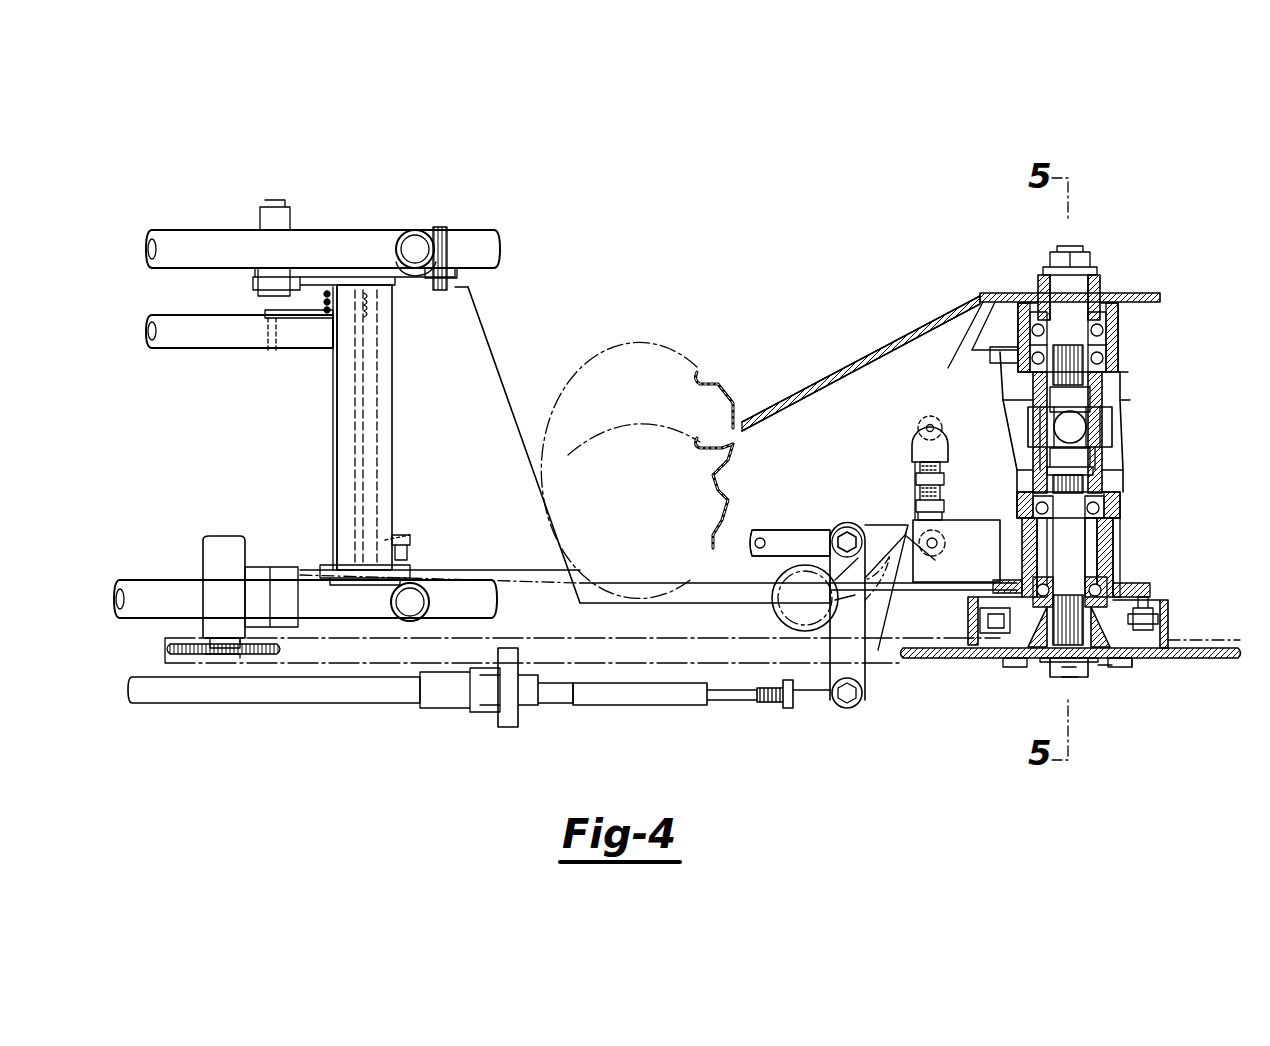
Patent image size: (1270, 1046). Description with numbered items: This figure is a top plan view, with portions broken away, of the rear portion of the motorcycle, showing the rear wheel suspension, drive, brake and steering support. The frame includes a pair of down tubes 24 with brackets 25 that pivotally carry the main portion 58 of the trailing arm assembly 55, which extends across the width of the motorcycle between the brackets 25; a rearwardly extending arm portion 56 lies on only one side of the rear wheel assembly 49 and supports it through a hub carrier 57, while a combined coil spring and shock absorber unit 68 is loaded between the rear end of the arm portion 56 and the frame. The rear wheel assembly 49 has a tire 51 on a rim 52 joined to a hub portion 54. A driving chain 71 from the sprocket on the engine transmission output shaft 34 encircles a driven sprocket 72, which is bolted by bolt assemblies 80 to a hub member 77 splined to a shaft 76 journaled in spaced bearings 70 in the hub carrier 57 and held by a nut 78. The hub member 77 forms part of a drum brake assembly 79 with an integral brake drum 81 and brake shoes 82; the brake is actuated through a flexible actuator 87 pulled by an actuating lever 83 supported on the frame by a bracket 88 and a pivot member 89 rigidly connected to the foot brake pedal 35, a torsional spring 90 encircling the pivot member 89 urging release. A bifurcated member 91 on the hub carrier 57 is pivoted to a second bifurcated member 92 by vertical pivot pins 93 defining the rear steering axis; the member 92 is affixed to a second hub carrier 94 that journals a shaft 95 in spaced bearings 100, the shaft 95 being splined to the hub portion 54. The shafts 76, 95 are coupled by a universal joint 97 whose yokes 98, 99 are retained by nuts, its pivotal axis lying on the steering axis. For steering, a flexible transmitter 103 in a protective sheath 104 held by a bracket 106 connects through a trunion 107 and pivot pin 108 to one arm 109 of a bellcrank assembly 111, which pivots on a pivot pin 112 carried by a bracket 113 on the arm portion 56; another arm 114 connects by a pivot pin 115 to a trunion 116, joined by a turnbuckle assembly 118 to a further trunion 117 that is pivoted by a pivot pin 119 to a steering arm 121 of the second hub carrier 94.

The down tube 24 is at (332, 238).
The bracket 25 is at (398, 268).
The engine transmission output shaft 34 is at (210, 552).
The foot brake pedal 35 is at (198, 335).
The rear wheel assembly 49 is at (731, 380).
The tire 51 is at (622, 342).
The rim 52 is at (760, 405).
The hub portion 54 is at (1104, 292).
The trailing arm assembly 55 is at (508, 335).
The rearwardly extending arm portion 56 is at (716, 590).
The hub carrier 57 is at (1127, 540).
The main portion 58 is at (337, 407).
The combined coil spring and shock absorber unit 68 is at (772, 530).
The bearings 70 is at (1120, 505).
The driving chain 71 is at (1232, 640).
The driven sprocket 72 is at (1185, 658).
The shaft 76 is at (1124, 525).
The hub member 77 is at (1052, 664).
The nut 78 is at (1078, 664).
The drum brake assembly 79 is at (1179, 617).
The bolt assemblies 80 is at (1112, 664).
The brake drum 81 is at (1163, 595).
The brake shoes 82 is at (1122, 662).
The actuating lever 83 is at (405, 545).
The flexible actuator 87 is at (776, 553).
The bracket 88 is at (310, 578).
The pivot member 89 is at (333, 432).
The torsional spring 90 is at (372, 318).
The bifurcated member 91 is at (1129, 457).
The second bifurcated member 92 is at (1125, 355).
The pivot pins 93 is at (1060, 427).
The second hub carrier 94 is at (1017, 323).
The shaft 95 is at (1058, 288).
The universal joint 97 is at (1134, 414).
The yoke 98 is at (1120, 430).
The yoke 99 is at (1105, 390).
The bearings 100 is at (1118, 320).
The flexible transmitter 103 is at (735, 700).
The protective sheath 104 is at (390, 705).
The bracket 106 is at (508, 727).
The trunion 107 is at (822, 698).
The pivot pin 108 is at (873, 683).
The arm 109 is at (870, 615).
The bellcrank assembly 111 is at (823, 647).
The pivot pin 112 is at (840, 524).
The bracket 113 is at (856, 527).
The arm 114 is at (885, 530).
The pivot pin 115 is at (940, 550).
The trunion 116 is at (955, 508).
The trunion 117 is at (948, 450).
The turnbuckle assembly 118 is at (917, 478).
The pivot pin 119 is at (943, 430).
The steering arm 121 is at (946, 366).